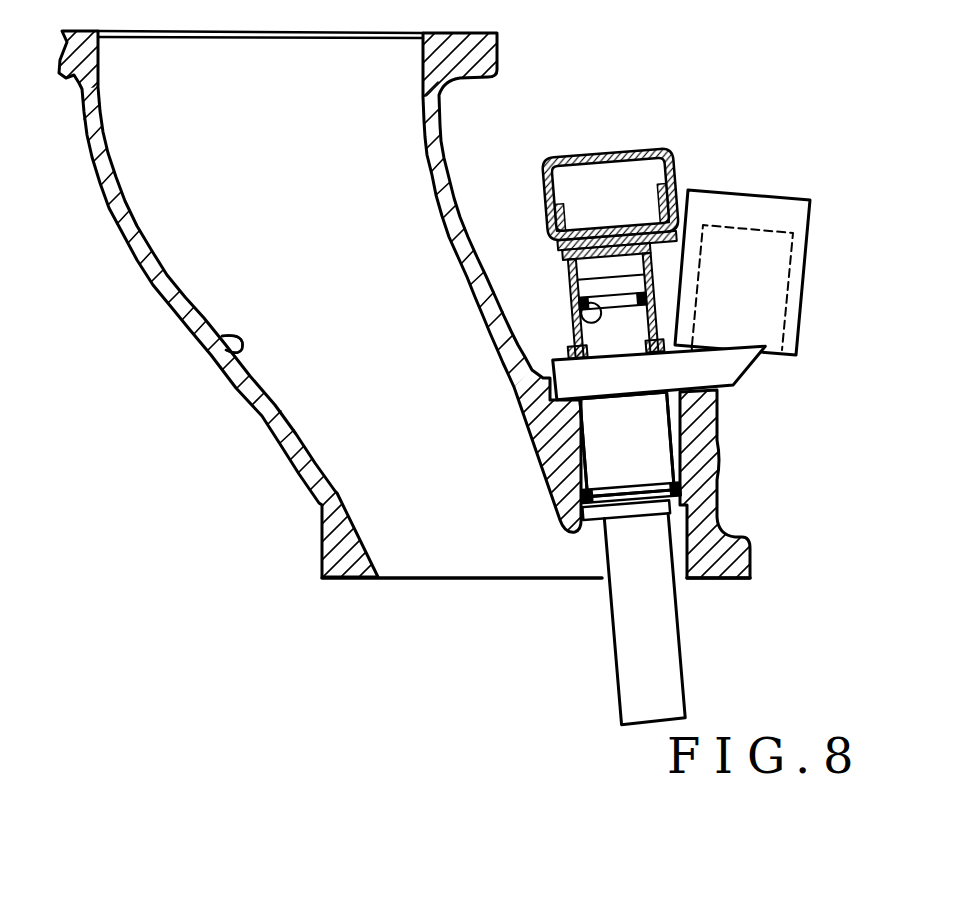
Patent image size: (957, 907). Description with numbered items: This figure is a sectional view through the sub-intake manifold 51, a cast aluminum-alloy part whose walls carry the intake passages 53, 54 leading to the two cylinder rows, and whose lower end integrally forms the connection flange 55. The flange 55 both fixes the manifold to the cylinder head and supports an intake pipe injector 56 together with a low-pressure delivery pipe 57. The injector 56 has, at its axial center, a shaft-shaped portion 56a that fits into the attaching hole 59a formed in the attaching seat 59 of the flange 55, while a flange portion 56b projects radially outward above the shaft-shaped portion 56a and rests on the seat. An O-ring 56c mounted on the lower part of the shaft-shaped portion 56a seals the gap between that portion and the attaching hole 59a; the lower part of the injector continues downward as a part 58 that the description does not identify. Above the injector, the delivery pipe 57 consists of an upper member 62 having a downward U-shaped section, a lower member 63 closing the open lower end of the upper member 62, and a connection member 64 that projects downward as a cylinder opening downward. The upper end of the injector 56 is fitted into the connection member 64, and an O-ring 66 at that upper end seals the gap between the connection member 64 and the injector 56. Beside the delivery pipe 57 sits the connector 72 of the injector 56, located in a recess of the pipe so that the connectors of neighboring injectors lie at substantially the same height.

The sub-intake manifold 51 is at (282, 447).
The intake passages 53 is at (228, 363).
The intake passages 54 is at (152, 377).
The connection flange 55 is at (742, 557).
The intake pipe injector 56 is at (643, 421).
The shaft-shaped portion 56a is at (711, 444).
The flange portion 56b is at (673, 370).
The O-ring 56c is at (598, 500).
The low-pressure delivery pipe 57 is at (593, 201).
The rod 58 is at (680, 628).
The attaching seat 59 is at (708, 450).
The attaching hole 59a is at (703, 520).
The upper member 62 is at (643, 148).
The lower member 63 is at (552, 243).
The connection member 64 is at (572, 283).
The O-ring 66 is at (590, 323).
The connector 72 is at (751, 190).